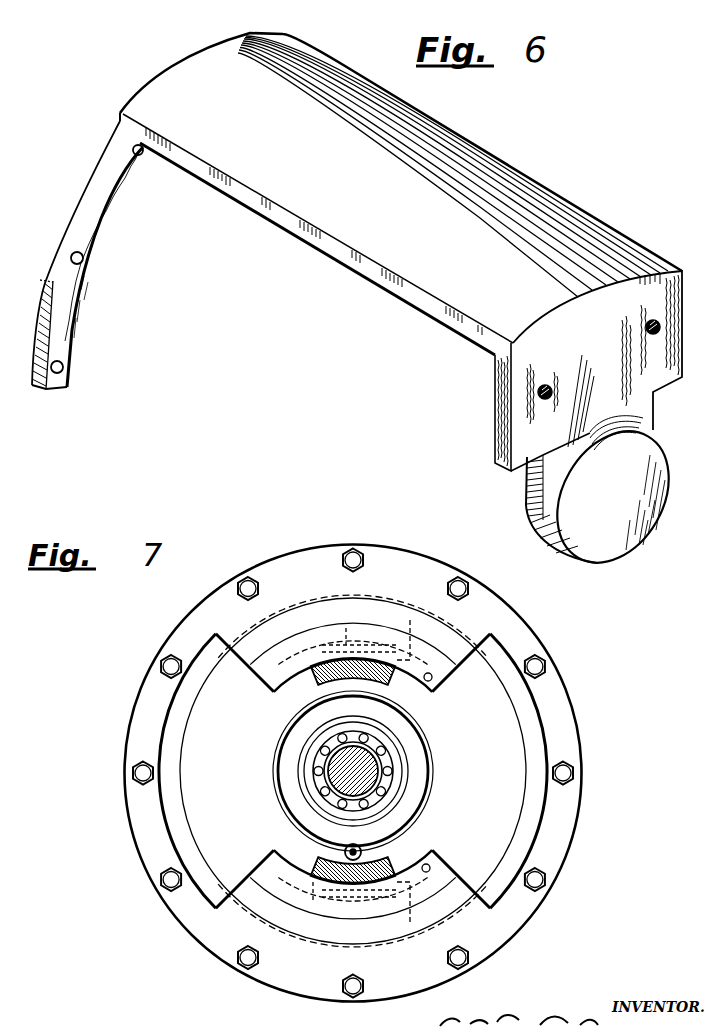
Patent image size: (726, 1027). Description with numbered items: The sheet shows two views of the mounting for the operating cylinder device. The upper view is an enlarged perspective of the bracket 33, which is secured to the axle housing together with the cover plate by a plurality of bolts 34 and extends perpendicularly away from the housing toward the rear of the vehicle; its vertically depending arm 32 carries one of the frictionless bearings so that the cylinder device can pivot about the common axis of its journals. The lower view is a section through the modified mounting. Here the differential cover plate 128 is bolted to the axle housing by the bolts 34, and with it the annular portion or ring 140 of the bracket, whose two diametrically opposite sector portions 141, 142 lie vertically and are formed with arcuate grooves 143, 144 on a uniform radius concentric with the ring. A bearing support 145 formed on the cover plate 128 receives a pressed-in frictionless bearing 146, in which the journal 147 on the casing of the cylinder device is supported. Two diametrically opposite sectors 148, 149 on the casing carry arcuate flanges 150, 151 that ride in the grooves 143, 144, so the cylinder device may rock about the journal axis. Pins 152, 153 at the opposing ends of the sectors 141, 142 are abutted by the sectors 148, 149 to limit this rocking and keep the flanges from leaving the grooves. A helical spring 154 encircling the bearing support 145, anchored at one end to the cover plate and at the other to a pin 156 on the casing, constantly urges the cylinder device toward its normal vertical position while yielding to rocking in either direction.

In FIG. 6, the vertically depending arm 32 is at (530, 362).
In FIG. 6, the bracket 33 is at (290, 190).
In FIG. 7, the bolts 34 is at (171, 666).
In FIG. 7, the differential cover plate 128 is at (503, 708).
In FIG. 7, the annular portion or ring 140 is at (552, 845).
In FIG. 7, the sector portion 141 is at (250, 652).
In FIG. 7, the sector portion 142 is at (244, 882).
In FIG. 7, the arcuate groove 143 is at (410, 627).
In FIG. 7, the arcuate groove 144 is at (410, 914).
In FIG. 7, the bearing support 145 is at (403, 745).
In FIG. 7, the frictionless bearing 146 is at (388, 790).
In FIG. 7, the journal 147 is at (337, 770).
In FIG. 7, the sector 148 is at (312, 674).
In FIG. 7, the sector 149 is at (312, 868).
In FIG. 7, the arcuate flange 150 is at (346, 630).
In FIG. 7, the arcuate flange 151 is at (313, 900).
In FIG. 7, the pin 152 is at (433, 681).
In FIG. 7, the pin 153 is at (430, 866).
In FIG. 7, the helical spring 154 is at (290, 813).
In FIG. 7, the pin 156 is at (364, 852).